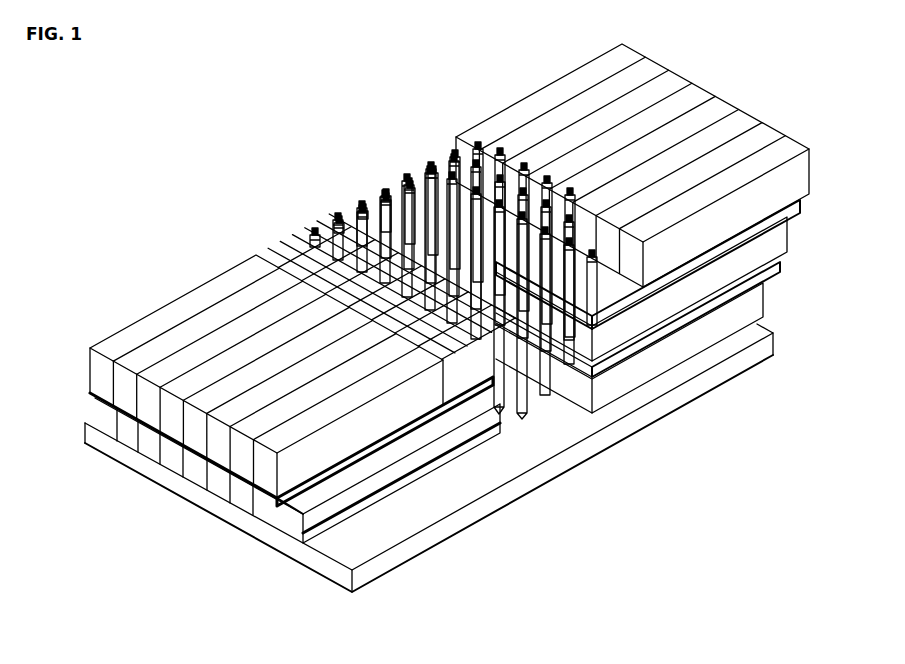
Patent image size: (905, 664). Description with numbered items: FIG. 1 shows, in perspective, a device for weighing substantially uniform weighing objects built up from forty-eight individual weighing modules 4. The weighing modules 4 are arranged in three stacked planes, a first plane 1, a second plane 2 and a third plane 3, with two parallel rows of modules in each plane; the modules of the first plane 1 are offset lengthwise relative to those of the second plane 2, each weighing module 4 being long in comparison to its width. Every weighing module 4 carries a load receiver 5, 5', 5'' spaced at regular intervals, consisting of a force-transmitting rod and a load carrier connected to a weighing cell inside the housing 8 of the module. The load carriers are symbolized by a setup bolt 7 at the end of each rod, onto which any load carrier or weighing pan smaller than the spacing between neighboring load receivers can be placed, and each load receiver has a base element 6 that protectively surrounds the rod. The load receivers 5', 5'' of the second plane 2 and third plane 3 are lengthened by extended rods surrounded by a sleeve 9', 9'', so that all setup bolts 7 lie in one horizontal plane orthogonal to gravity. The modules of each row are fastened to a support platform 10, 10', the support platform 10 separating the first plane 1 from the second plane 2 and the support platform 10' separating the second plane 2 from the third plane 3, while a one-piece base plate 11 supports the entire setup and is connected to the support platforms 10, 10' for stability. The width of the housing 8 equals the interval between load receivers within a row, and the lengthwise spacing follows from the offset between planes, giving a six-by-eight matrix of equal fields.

The first plane 1 is at (822, 168).
The second plane 2 is at (822, 236).
The third plane 3 is at (822, 295).
The weighing module 4 is at (163, 282).
The load receiver 5 is at (274, 206).
The load receiver 5' is at (307, 198).
The load receiver 5'' is at (342, 193).
The base element 6 is at (430, 178).
The setup bolt 7 is at (476, 186).
The housing 8 is at (332, 460).
The sleeve 9' is at (533, 395).
The sleeve 9'' is at (564, 393).
The support platform 10 is at (260, 551).
The support platform 10' is at (297, 517).
The base plate 11 is at (367, 575).